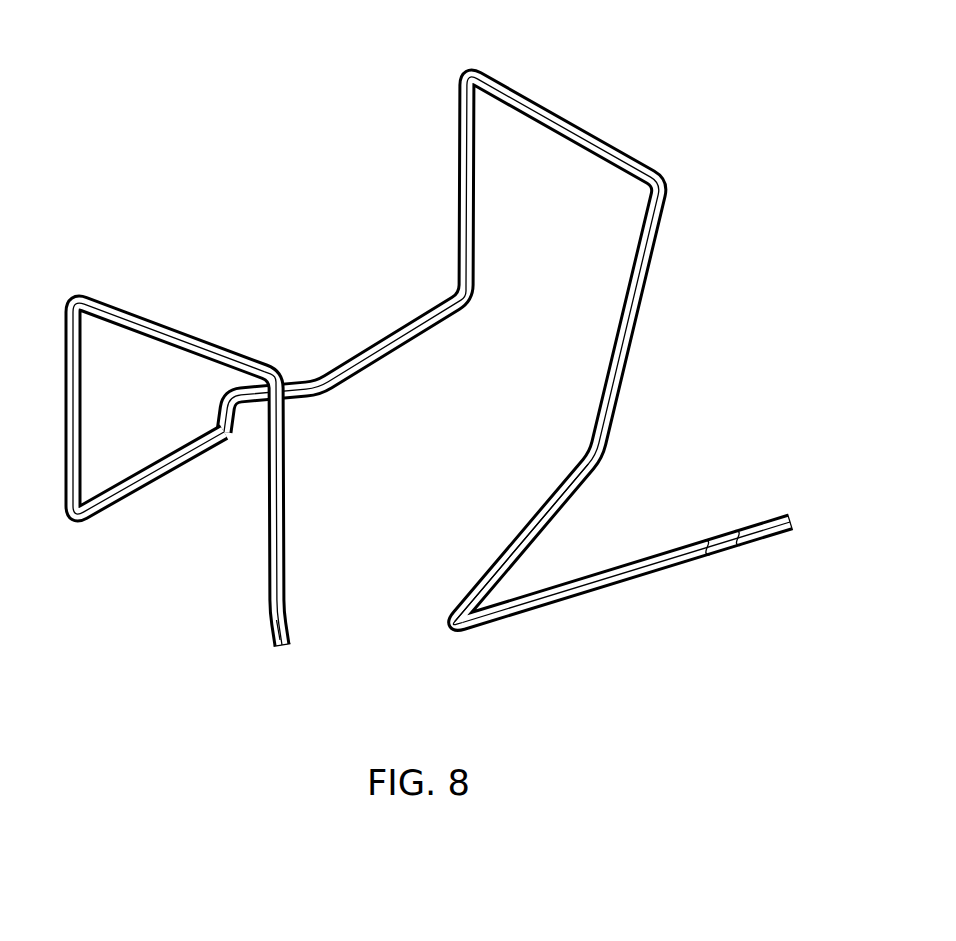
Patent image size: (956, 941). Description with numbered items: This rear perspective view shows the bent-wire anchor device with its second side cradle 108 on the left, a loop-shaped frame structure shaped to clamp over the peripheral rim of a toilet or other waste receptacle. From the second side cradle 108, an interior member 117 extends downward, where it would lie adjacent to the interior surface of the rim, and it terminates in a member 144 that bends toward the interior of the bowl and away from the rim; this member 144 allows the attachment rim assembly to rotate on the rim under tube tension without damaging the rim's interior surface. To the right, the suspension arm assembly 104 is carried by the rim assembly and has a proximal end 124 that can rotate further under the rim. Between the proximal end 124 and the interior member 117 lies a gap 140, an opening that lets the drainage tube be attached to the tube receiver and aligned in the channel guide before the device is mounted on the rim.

The second side cradle 108 is at (141, 277).
The proximal end 124 is at (449, 560).
The suspension arm assembly 104 is at (632, 522).
The interior member 117 is at (268, 540).
The member 144 is at (250, 653).
The gap 140 is at (354, 663).